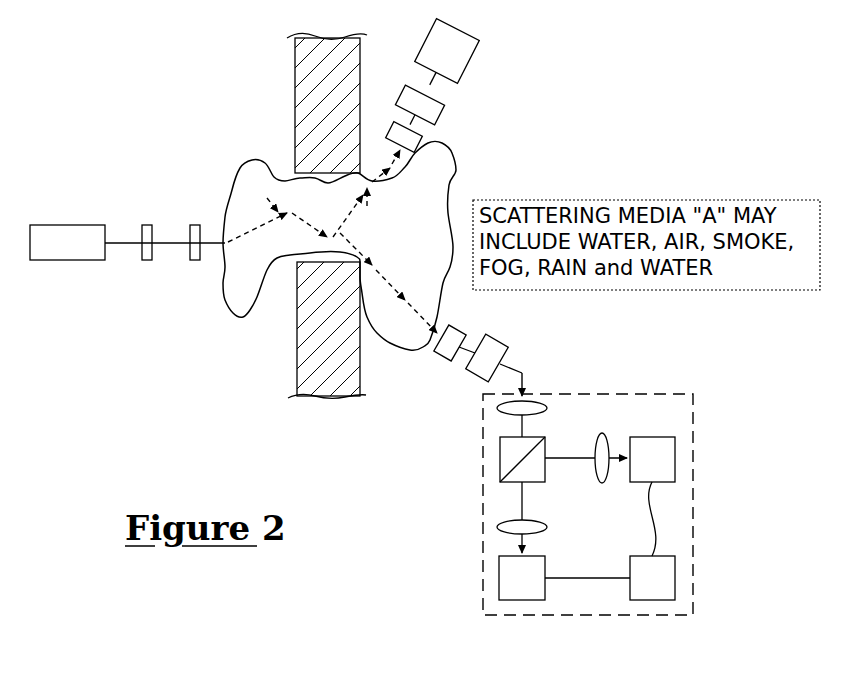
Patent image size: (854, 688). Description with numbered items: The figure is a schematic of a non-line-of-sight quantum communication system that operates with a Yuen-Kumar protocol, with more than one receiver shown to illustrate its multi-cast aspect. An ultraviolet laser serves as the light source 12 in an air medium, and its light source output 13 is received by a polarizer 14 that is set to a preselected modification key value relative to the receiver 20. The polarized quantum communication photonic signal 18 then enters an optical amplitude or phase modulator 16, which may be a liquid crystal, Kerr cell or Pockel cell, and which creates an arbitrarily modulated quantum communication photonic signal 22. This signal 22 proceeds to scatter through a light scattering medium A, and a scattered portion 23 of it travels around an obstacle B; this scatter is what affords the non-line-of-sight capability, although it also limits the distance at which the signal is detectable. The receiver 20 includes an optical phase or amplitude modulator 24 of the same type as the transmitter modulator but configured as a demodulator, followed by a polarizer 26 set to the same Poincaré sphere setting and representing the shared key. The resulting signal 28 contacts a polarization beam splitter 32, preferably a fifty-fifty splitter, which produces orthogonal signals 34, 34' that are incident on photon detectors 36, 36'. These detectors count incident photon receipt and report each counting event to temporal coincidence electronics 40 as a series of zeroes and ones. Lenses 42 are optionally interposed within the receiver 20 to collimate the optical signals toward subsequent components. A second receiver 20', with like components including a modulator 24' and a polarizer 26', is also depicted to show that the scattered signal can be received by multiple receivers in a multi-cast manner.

The light source 12 is at (75, 256).
The light source output 13 is at (120, 242).
The polarizer 14 is at (146, 261).
The optical amplitude or phase modulator 16 is at (193, 261).
The polarized quantum communication photonic signal 18 is at (172, 242).
The arbitrarily modulated quantum communication photonic signal 22 is at (212, 242).
The scattered portion 23 is at (267, 196).
The optical phase or amplitude modulator 24 is at (429, 371).
The polarizer 26 is at (479, 384).
The resulting signal 28 is at (518, 374).
The receiver 20 is at (588, 527).
The second receiver 20' is at (443, 57).
The modulator 24' is at (455, 142).
The polarizer 26' is at (467, 104).
The polarization beam splitter 32 is at (500, 458).
The orthogonal signal 34 is at (507, 517).
The orthogonal signal 34' is at (586, 443).
The photon detector 36 is at (481, 578).
The photon detector 36' is at (653, 413).
The temporal coincidence electronics 40 is at (660, 590).
The lenses 42 is at (603, 433).
The light scattering medium A is at (251, 298).
The obstacle B is at (338, 368).